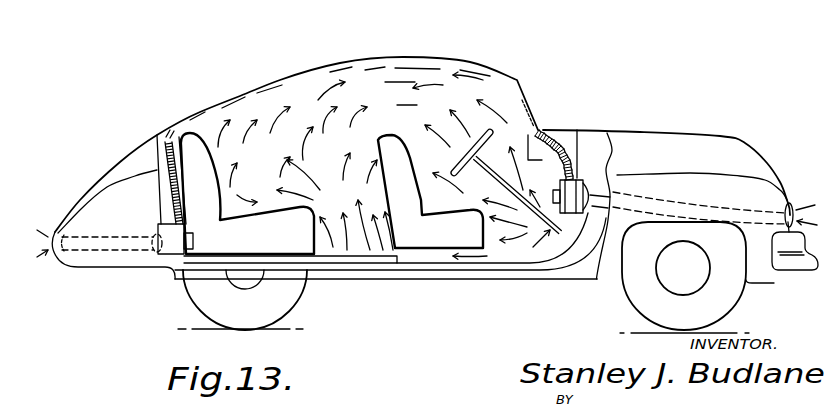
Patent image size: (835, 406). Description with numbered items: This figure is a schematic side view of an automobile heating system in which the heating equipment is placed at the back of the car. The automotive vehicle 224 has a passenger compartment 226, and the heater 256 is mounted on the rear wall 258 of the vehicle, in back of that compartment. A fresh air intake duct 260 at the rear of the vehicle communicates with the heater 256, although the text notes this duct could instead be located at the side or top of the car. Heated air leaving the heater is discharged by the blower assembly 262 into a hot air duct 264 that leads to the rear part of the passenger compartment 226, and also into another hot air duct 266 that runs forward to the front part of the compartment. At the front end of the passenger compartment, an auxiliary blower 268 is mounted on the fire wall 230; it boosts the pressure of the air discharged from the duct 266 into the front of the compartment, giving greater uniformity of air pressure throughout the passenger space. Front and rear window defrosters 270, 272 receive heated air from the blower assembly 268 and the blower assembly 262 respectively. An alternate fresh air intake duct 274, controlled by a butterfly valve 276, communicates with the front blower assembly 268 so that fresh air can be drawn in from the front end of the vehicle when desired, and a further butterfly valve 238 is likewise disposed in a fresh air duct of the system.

The automotive vehicle 224 is at (348, 63).
The passenger compartment 226 is at (433, 65).
The rear window defroster 272 is at (166, 153).
The rear wall 258 is at (165, 210).
The heater 256 is at (167, 256).
The blower assembly 262 is at (186, 232).
The fresh air intake duct 260 is at (95, 250).
The hot air duct 264 is at (352, 264).
The hot air duct 266 is at (450, 281).
The front window defroster 270 is at (547, 136).
The fire wall 230 is at (570, 137).
The butterfly valve 238 is at (600, 136).
The auxiliary blower 268 is at (566, 188).
The butterfly valve 276 is at (617, 197).
The alternate fresh air intake duct 274 is at (697, 214).